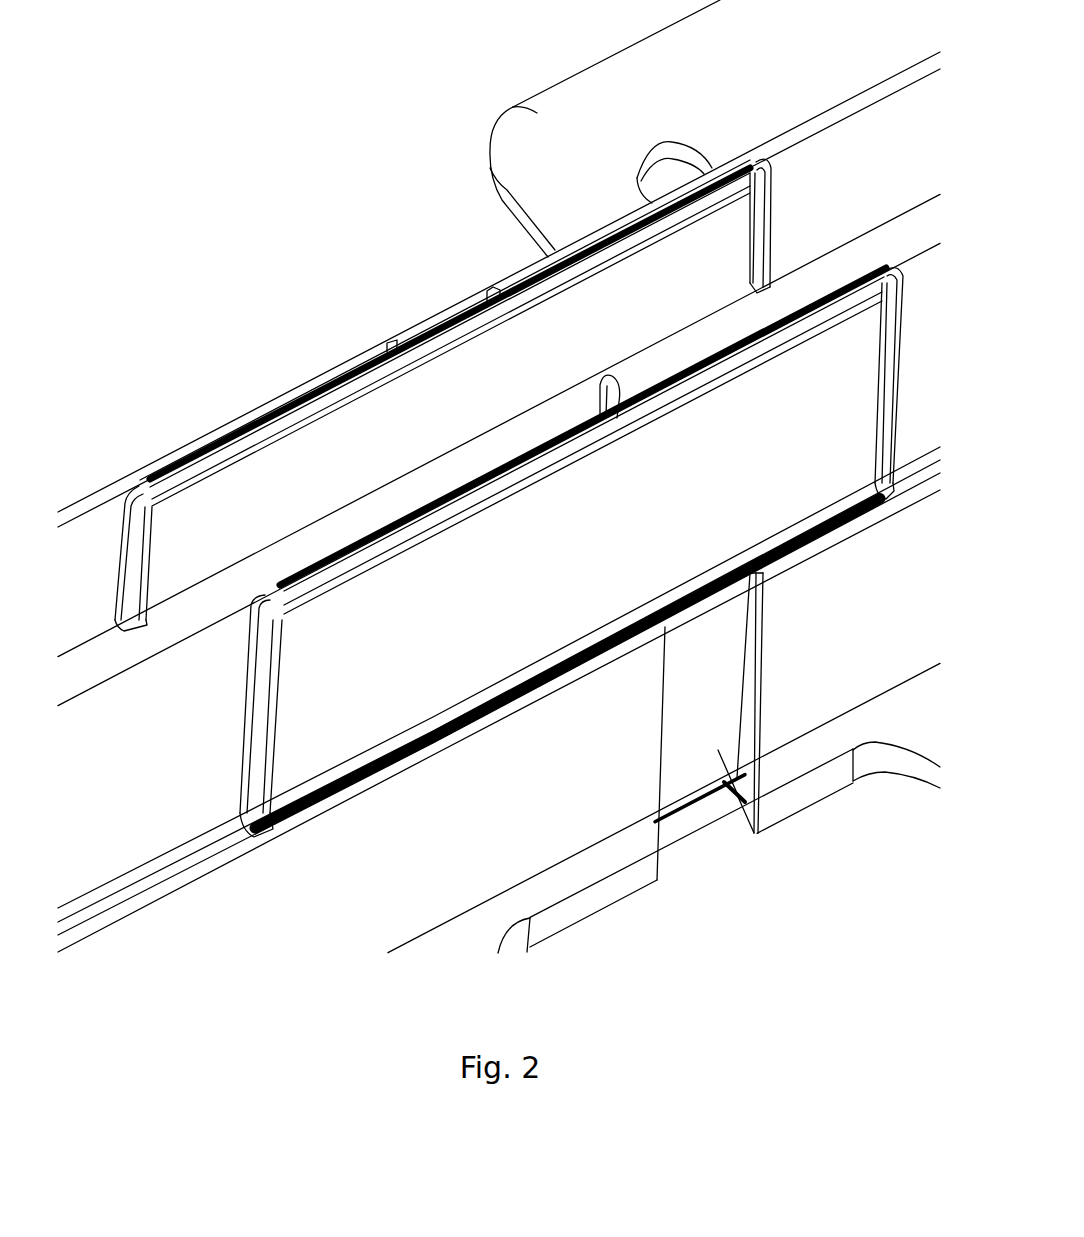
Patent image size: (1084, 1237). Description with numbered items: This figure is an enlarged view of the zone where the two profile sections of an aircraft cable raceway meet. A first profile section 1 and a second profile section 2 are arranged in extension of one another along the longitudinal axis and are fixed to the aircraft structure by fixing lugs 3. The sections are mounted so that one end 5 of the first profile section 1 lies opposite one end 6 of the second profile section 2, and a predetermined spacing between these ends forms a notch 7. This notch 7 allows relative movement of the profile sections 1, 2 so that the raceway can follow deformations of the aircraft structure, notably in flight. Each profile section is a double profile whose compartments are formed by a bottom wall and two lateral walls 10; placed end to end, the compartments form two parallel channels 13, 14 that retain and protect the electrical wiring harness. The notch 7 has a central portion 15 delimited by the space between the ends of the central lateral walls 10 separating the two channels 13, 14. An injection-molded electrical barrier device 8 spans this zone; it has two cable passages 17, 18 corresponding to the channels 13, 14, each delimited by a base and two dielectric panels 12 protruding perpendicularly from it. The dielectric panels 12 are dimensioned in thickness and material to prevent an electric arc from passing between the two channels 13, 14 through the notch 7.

The first profile section 1 is at (446, 547).
The second profile section 2 is at (506, 268).
The fixing lug 3 is at (498, 108).
The end of the first profile section 5 is at (668, 728).
The end of the second profile section 6 is at (750, 658).
The notch 7 is at (465, 560).
The electrical barrier device 8 is at (326, 400).
The lateral wall 10 is at (852, 90).
The dielectric panel 12 is at (418, 343).
The first channel 13 is at (190, 754).
The second channel 14 is at (897, 190).
The central portion of the notch 15 is at (568, 420).
The first cable passage 17 is at (597, 610).
The second cable passage 18 is at (444, 419).